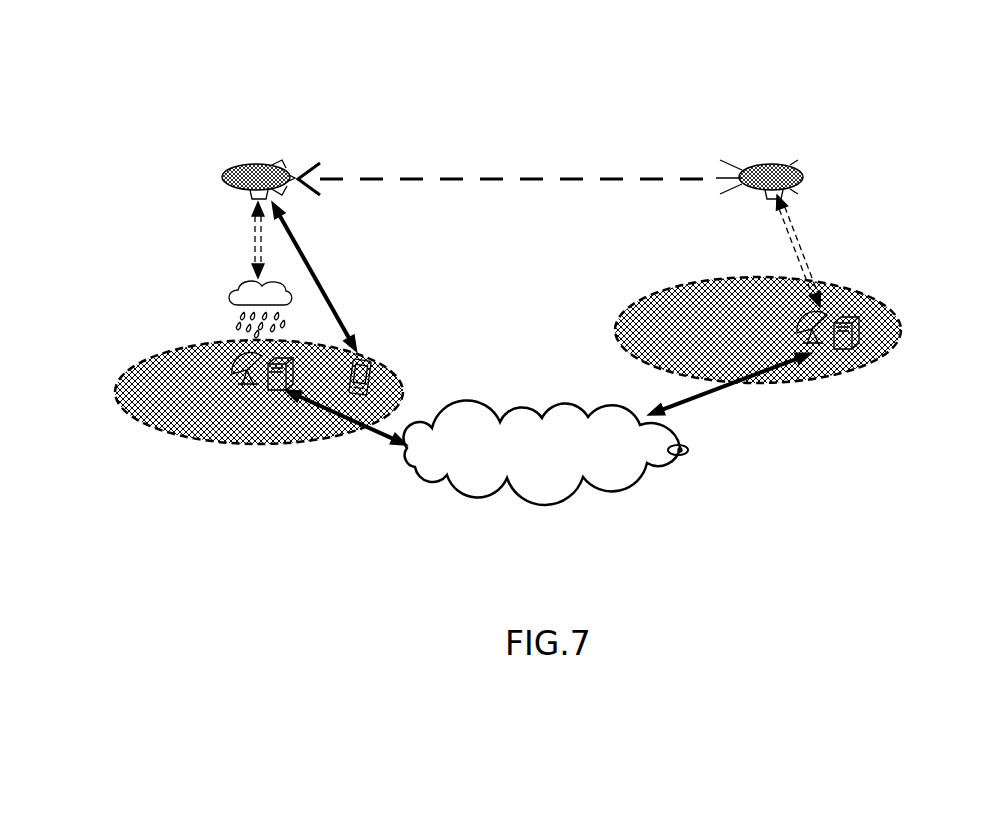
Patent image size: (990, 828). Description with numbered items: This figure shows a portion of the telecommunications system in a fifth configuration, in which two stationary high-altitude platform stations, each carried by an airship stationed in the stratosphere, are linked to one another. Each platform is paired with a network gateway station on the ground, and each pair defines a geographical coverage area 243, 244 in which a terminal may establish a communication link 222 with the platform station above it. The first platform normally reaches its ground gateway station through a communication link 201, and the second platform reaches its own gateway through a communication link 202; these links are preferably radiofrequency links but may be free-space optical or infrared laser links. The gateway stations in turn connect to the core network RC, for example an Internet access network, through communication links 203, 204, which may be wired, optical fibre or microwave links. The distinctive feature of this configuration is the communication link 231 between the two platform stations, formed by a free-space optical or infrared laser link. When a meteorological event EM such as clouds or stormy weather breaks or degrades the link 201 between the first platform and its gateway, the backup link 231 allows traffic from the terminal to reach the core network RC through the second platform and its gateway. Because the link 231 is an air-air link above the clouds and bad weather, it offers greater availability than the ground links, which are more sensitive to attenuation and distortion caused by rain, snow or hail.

The communication link between high-altitude platform stations 231 is at (492, 178).
The communication link 201 is at (256, 236).
The communication link 202 is at (800, 253).
The communication link 222 is at (313, 283).
The communication link 203 is at (372, 438).
The communication link 204 is at (718, 388).
The environment (weather) EM is at (228, 302).
The geographical coverage area 244 is at (152, 425).
The geographical coverage area 243 is at (883, 360).
The core network RC is at (553, 488).